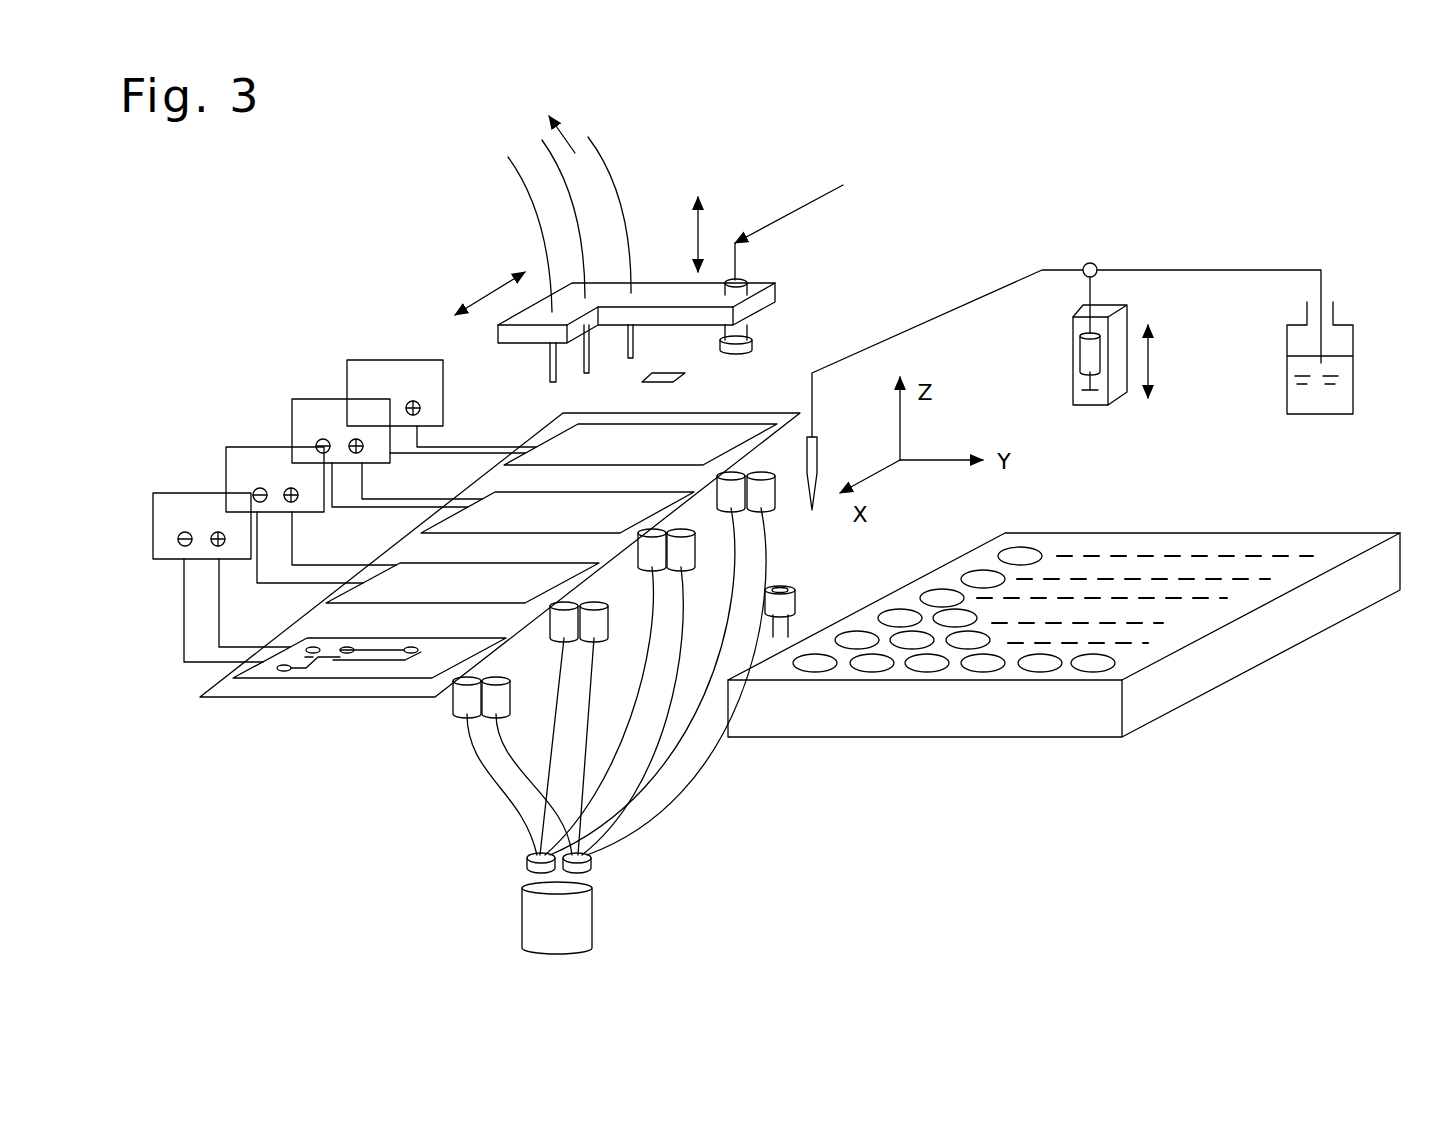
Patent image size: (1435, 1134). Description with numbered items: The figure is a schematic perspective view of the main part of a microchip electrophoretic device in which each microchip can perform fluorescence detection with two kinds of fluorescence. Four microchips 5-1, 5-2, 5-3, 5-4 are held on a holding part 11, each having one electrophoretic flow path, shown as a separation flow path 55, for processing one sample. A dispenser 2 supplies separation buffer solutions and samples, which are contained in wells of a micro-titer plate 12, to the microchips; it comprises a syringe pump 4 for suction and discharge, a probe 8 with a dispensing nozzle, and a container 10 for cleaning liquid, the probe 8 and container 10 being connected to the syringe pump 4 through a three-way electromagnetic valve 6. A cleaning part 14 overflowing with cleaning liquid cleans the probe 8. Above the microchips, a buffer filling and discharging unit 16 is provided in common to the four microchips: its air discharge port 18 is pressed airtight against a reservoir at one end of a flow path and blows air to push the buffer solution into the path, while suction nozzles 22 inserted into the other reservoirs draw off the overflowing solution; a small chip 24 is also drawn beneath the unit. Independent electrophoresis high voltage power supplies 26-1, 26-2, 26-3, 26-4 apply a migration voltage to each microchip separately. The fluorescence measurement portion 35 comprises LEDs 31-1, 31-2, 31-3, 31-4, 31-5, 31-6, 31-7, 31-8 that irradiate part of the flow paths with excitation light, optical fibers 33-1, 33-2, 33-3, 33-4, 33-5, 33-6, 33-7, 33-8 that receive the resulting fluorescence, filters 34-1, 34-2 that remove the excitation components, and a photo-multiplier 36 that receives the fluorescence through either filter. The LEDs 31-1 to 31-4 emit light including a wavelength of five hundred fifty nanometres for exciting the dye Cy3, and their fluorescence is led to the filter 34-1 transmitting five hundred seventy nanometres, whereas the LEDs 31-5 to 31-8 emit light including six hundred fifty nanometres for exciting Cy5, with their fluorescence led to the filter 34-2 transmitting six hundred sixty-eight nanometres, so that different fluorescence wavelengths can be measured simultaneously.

The dispenser 2 is at (947, 315).
The syringe pump 4 is at (1087, 353).
The three-way electromagnetic valve 6 is at (1087, 262).
The probe 8 is at (817, 448).
The container 10 is at (1340, 372).
The holding part 11 is at (240, 700).
The micro-titer plate 12 is at (1175, 533).
The cleaning part 14 is at (787, 607).
The buffer filling and discharging unit 16 is at (650, 290).
The air discharge port 18 is at (747, 328).
The suction nozzles 22 is at (547, 362).
The chip 24 is at (643, 380).
The electrophoresis high voltage power supply 26-1 is at (373, 368).
The electrophoresis high voltage power supply 26-2 is at (310, 403).
The electrophoresis high voltage power supply 26-3 is at (253, 453).
The electrophoresis high voltage power supply 26-4 is at (180, 500).
The microchip 5-1 is at (645, 437).
The microchip 5-2 is at (502, 505).
The microchip 5-3 is at (422, 572).
The microchip 5-4 is at (455, 647).
The separation flow path 55 is at (373, 658).
The LED 31-1 is at (765, 497).
The LED 31-2 is at (682, 553).
The LED 31-3 is at (595, 625).
The LED 31-4 is at (497, 695).
The LED 31-5 is at (728, 488).
The LED 31-6 is at (648, 547).
The LED 31-7 is at (565, 620).
The LED 31-8 is at (468, 695).
The optical fiber 33-1 is at (690, 728).
The optical fiber 33-2 is at (703, 788).
The optical fiber 33-3 is at (610, 785).
The optical fiber 33-4 is at (582, 732).
The optical fiber 33-5 is at (665, 723).
The optical fiber 33-6 is at (613, 815).
The optical fiber 33-7 is at (618, 730).
The optical fiber 33-8 is at (548, 728).
The filter 34-1 is at (587, 873).
The filter 34-2 is at (530, 860).
The fluorescence measurement portion 35 is at (656, 826).
The photo-multiplier 36 is at (540, 922).